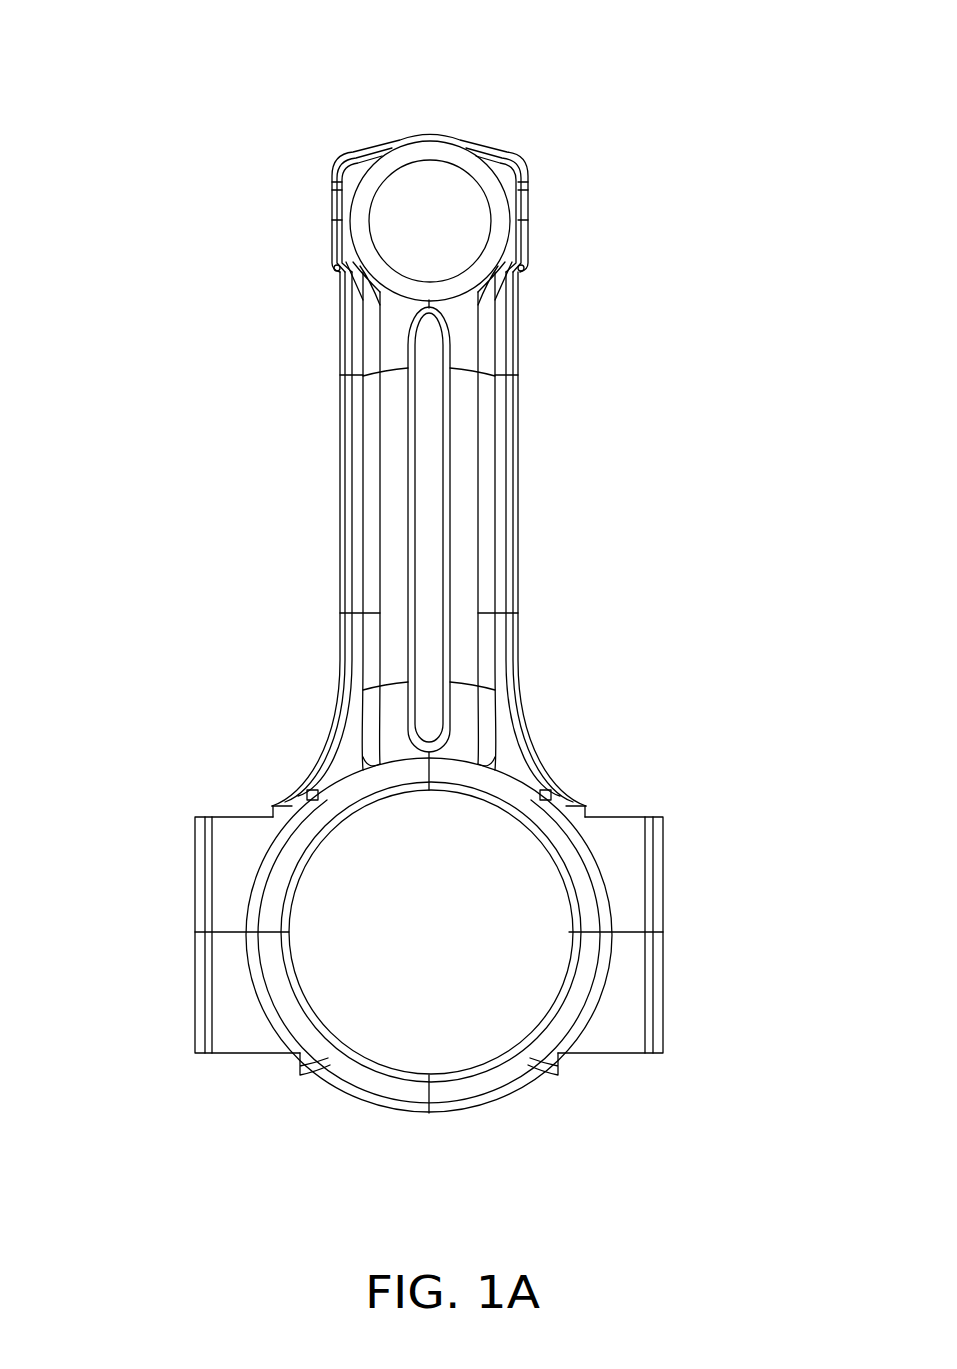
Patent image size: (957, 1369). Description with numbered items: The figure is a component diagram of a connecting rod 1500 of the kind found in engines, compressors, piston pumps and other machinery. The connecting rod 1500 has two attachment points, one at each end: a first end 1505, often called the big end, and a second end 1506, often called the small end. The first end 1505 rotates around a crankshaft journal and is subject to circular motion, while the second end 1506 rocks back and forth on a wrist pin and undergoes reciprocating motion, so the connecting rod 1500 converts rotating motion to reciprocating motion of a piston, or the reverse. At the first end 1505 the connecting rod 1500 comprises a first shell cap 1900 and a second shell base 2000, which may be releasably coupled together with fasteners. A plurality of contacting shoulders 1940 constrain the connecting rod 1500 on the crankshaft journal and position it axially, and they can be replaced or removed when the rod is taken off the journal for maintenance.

The connecting rod 1500 is at (600, 143).
The second end 1506 is at (420, 228).
The first end 1505 is at (425, 923).
The contacting shoulders 1940 is at (462, 1085).
The second shell base 2000 is at (233, 848).
The first shell cap 1900 is at (623, 1030).